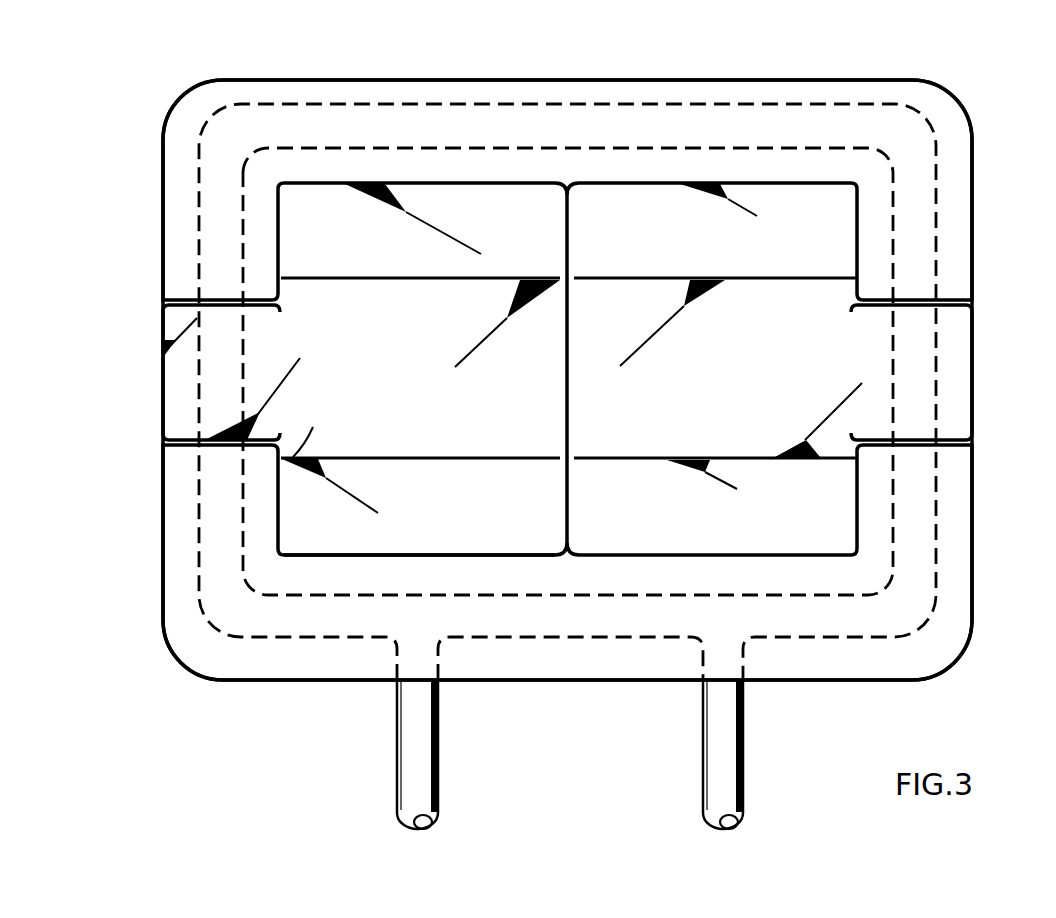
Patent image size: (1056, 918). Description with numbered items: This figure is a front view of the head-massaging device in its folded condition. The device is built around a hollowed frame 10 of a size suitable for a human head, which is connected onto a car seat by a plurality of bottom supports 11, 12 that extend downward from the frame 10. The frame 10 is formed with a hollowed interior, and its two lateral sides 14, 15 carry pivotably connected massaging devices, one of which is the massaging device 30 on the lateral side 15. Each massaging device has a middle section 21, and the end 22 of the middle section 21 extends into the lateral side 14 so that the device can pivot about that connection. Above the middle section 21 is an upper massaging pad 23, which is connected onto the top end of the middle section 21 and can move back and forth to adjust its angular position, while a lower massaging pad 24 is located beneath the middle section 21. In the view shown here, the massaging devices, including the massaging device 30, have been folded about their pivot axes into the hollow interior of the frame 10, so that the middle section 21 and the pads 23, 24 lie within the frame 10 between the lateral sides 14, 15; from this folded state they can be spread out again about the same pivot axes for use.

The hollowed frame 10 is at (678, 79).
The bottom support 11 is at (422, 737).
The bottom support 12 is at (728, 746).
The lateral side 14 is at (163, 205).
The lateral side 15 is at (973, 168).
The middle section 21 is at (280, 478).
The end of the middle section 22 is at (163, 374).
The upper massaging pad 23 is at (358, 222).
The lower massaging pad 24 is at (360, 542).
The massaging device 30 is at (979, 345).